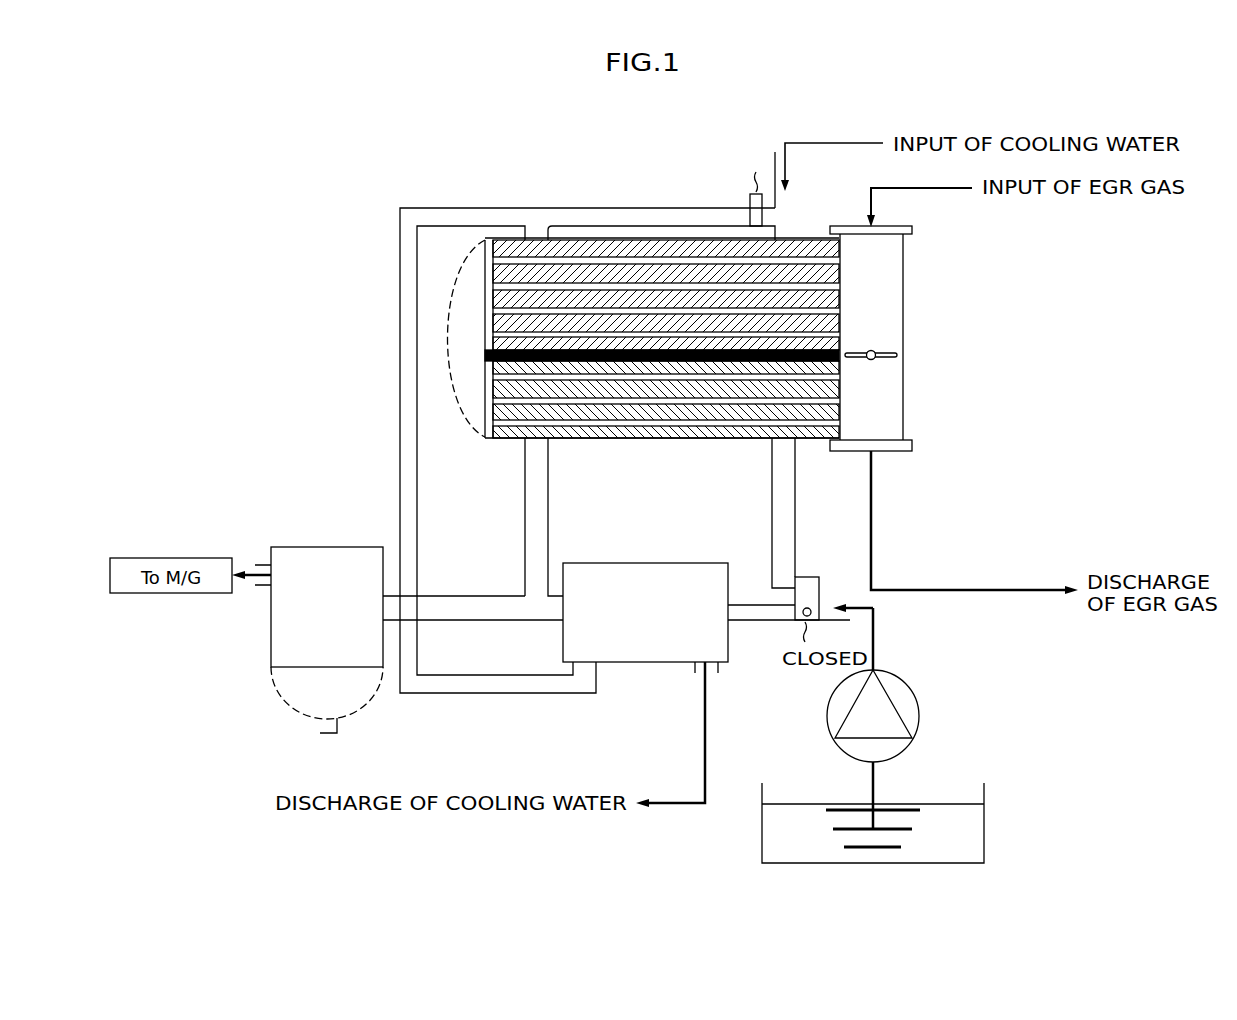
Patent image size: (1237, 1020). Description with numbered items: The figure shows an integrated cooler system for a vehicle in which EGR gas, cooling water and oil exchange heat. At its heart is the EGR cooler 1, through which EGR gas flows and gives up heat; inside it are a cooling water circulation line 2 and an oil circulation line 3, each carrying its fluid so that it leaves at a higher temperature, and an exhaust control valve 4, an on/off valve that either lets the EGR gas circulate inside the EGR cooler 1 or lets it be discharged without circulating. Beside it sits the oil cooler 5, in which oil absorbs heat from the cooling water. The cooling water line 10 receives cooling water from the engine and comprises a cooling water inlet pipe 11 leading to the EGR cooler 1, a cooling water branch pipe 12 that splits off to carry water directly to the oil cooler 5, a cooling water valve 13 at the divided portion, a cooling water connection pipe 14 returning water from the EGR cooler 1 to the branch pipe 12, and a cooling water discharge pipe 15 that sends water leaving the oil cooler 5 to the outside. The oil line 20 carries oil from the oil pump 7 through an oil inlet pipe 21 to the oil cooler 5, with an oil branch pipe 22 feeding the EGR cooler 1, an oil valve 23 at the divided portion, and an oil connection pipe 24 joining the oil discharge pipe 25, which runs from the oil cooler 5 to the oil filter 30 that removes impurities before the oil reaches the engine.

The EGR cooler 1 is at (1053, 240).
The cooling water circulation line 2 is at (840, 273).
The oil circulation line 3 is at (840, 387).
The exhaust control valve 4 is at (890, 353).
The oil cooler 5 is at (625, 663).
The oil pump 7 is at (920, 716).
The cooling water line 10 is at (605, 134).
The cooling water inlet pipe 11 is at (773, 168).
The cooling water branch pipe 12 is at (503, 207).
The cooling water valve 13 is at (748, 215).
The cooling water connection pipe 14 is at (556, 228).
The cooling water discharge pipe 15 is at (695, 668).
The oil line 20 is at (1022, 403).
The oil inlet pipe 21 is at (822, 596).
The oil branch pipe 22 is at (797, 528).
The oil valve 23 is at (805, 590).
The oil connection pipe 24 is at (550, 537).
The oil discharge pipe 25 is at (458, 596).
The oil filter 30 is at (275, 687).